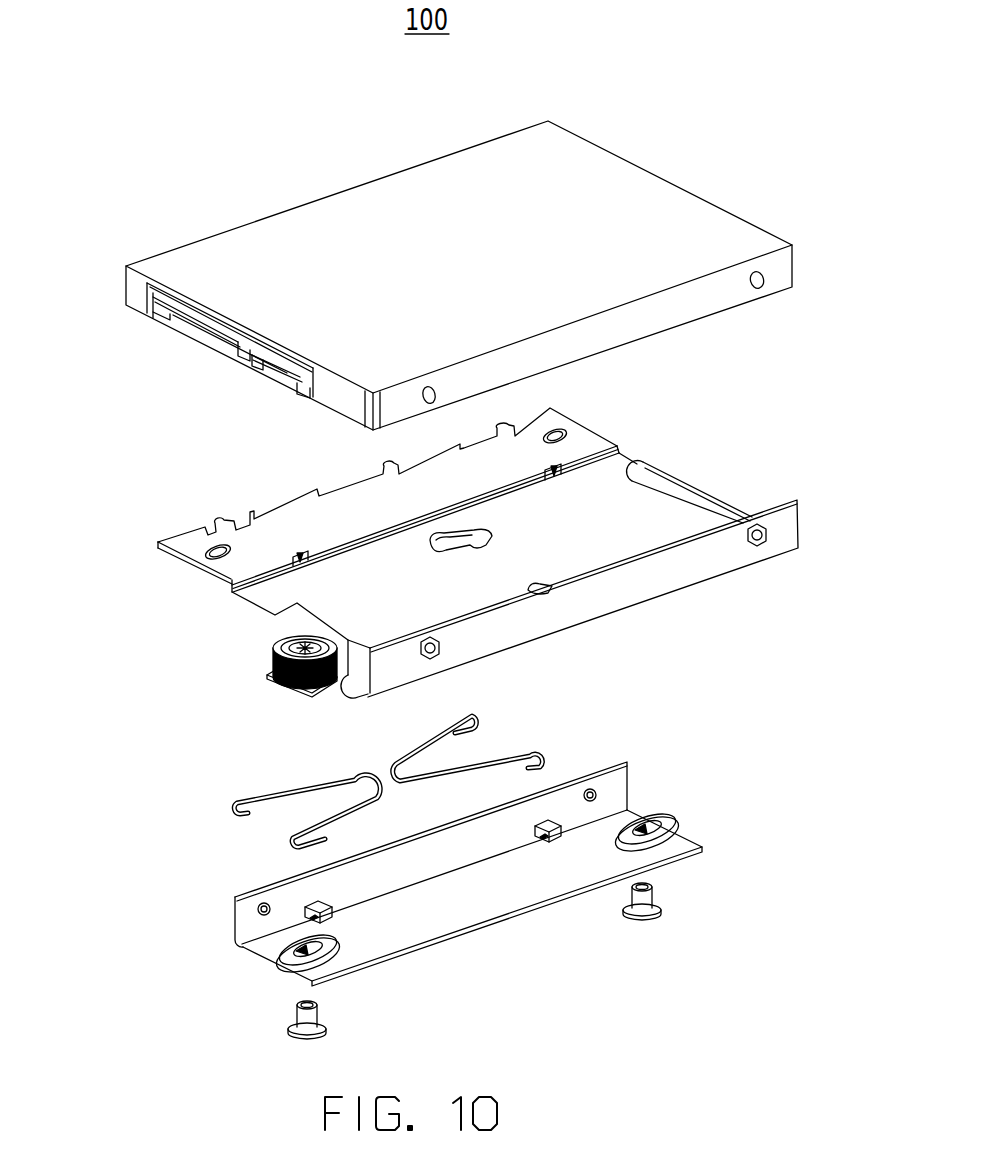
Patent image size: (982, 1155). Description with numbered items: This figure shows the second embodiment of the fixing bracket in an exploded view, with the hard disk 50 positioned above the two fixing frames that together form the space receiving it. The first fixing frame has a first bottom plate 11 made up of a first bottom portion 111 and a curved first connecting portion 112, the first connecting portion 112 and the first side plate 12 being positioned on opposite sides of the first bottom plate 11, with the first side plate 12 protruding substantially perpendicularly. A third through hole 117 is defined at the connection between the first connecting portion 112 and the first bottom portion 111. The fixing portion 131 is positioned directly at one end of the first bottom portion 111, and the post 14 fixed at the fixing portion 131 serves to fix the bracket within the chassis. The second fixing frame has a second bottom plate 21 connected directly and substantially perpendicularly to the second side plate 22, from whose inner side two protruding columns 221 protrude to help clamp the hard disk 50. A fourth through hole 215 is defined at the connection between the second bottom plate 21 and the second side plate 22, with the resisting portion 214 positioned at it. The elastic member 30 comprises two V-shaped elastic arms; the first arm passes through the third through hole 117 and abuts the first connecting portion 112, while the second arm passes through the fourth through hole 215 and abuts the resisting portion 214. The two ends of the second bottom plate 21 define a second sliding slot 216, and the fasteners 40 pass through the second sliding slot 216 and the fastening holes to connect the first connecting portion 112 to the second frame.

The hard disk 50 is at (375, 210).
The first bottom plate 11 is at (435, 571).
The first bottom portion 111 is at (232, 566).
The first connecting portion 112 is at (265, 597).
The third through hole 117 is at (556, 470).
The first side plate 12 is at (591, 597).
The fixing portion 131 is at (347, 658).
The post 14 is at (275, 654).
The elastic member 30 is at (282, 800).
The second bottom plate 21 is at (465, 916).
The second side plate 22 is at (428, 854).
The protruding columns 221 is at (647, 784).
The resisting portion 214 is at (330, 913).
The fourth through hole 215 is at (314, 923).
The second sliding slot 216 is at (303, 953).
The fasteners 40 is at (658, 890).